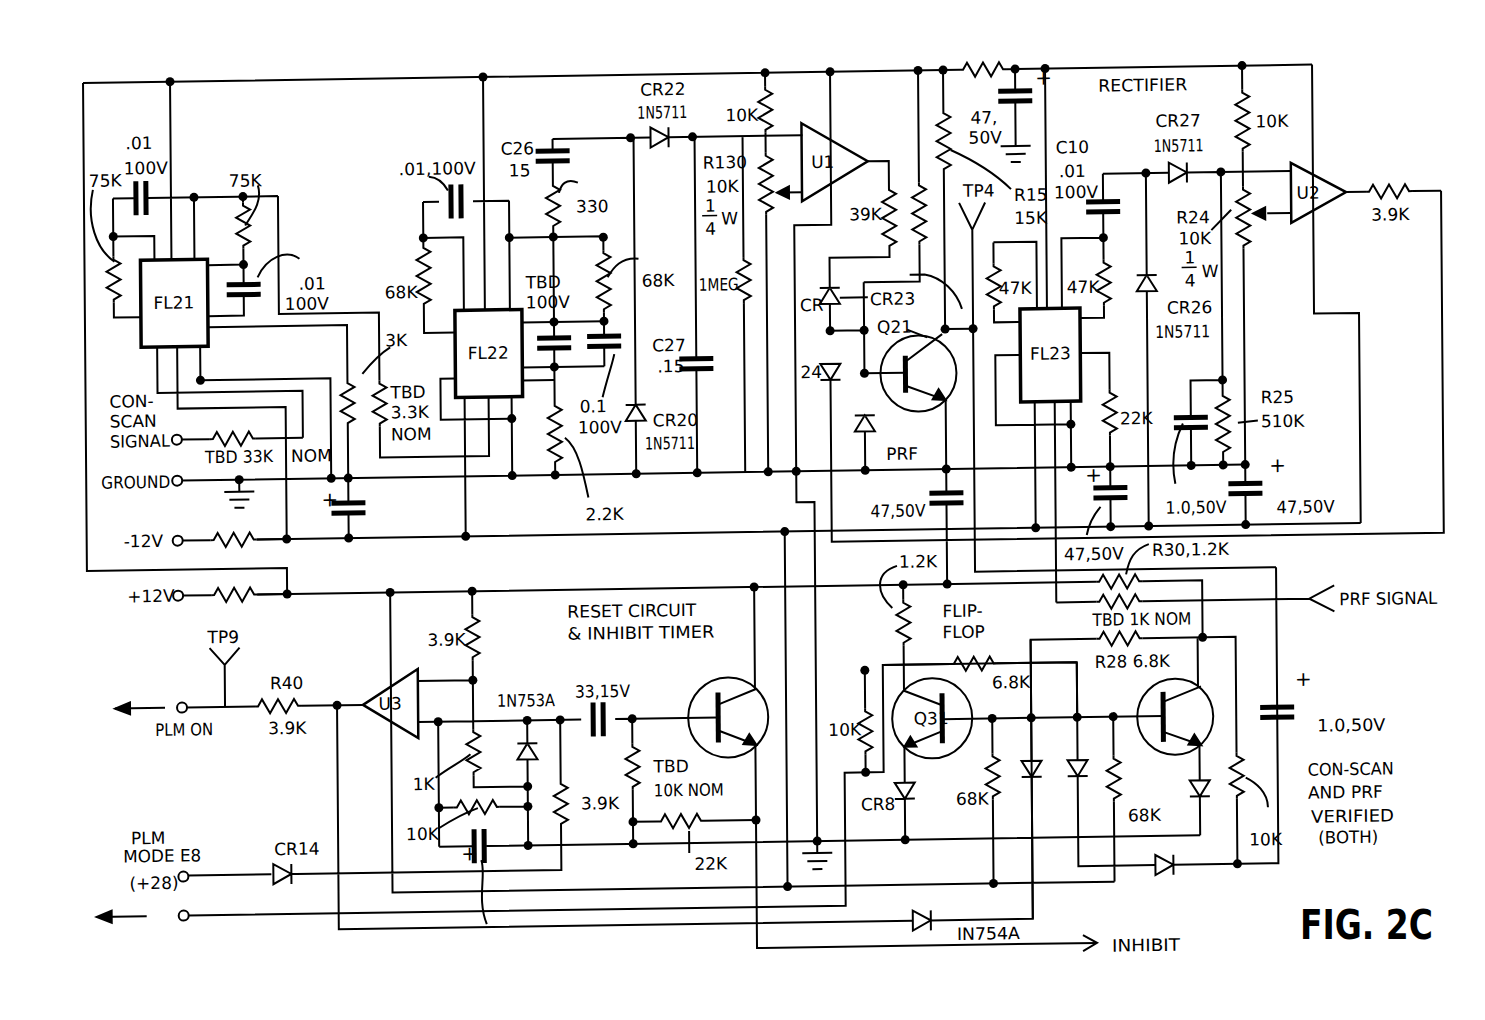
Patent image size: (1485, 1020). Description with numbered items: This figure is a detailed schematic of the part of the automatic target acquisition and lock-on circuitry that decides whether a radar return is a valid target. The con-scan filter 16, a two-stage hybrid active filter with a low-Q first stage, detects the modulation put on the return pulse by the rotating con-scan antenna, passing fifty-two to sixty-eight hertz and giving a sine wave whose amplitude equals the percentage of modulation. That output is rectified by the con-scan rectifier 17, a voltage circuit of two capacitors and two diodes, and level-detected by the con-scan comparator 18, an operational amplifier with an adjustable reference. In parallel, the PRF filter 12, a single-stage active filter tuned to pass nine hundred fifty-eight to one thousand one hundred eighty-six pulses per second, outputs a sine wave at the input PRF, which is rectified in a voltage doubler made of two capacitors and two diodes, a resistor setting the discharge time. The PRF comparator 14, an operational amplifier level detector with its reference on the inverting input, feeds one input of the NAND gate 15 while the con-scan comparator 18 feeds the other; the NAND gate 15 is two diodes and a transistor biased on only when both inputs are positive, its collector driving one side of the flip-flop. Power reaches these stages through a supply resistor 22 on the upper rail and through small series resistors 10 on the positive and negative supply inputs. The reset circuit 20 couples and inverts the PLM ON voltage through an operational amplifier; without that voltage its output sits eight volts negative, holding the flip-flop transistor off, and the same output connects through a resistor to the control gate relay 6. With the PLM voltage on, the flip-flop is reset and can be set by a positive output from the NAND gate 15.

The con-scan filter 16 is at (348, 308).
The con-scan rectifier 17 is at (670, 263).
The con-scan comparator 18 is at (869, 255).
The resistor 22 is at (983, 62).
The PRF filter 12 is at (1140, 318).
The PRF comparator 14 is at (1362, 139).
The NAND gate 15 is at (1119, 452).
The reset circuit 20 is at (265, 398).
The resistor 10 is at (252, 601).
The control gate relay 6 is at (587, 808).